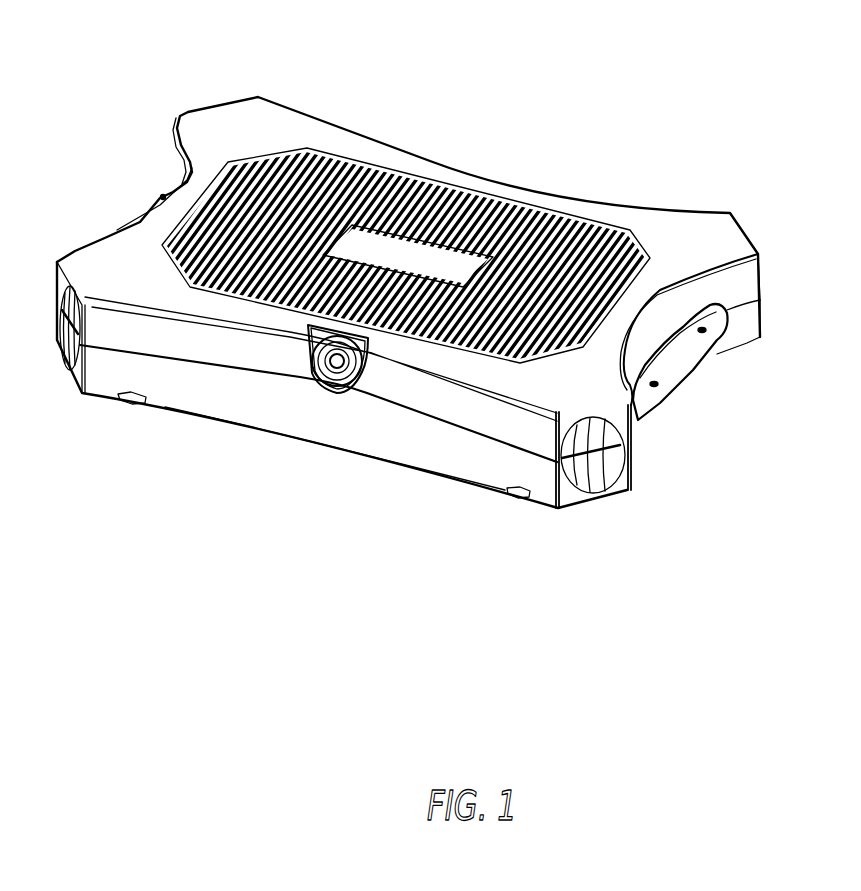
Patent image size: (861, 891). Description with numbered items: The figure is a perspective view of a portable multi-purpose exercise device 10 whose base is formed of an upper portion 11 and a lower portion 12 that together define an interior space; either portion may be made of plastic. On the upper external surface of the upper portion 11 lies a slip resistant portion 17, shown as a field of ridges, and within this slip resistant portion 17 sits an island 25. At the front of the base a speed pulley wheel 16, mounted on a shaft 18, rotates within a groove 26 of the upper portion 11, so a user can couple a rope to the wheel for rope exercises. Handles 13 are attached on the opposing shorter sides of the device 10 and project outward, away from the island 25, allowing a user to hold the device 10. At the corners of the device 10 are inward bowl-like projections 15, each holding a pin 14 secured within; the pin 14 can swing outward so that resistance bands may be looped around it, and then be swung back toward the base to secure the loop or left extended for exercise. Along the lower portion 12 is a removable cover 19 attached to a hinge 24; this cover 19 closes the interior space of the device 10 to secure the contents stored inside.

The multi-purpose exercise device 10 is at (403, 70).
The upper portion 11 is at (760, 272).
The lower portion 12 is at (760, 312).
The handles 13 is at (683, 393).
The pin 14 is at (605, 470).
The inward bowl-like projections 15 is at (592, 492).
The speed pulley wheel 16 is at (352, 393).
The slip resistant portion 17 is at (553, 210).
The shaft 18 is at (320, 378).
The removable cover 19 is at (197, 418).
The hinge 24 is at (137, 405).
The island 25 is at (400, 233).
The groove 26 is at (367, 367).